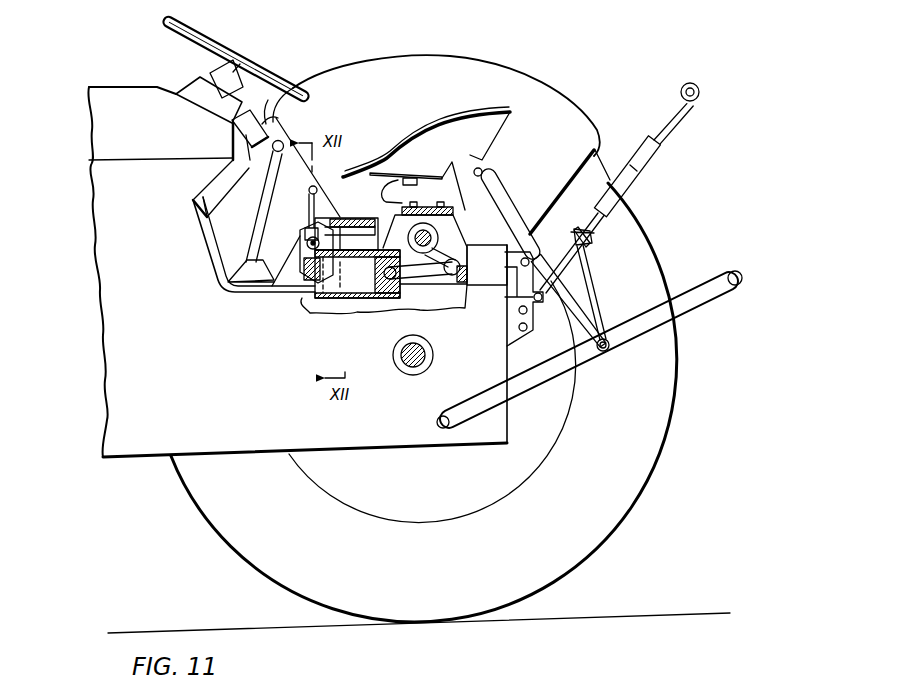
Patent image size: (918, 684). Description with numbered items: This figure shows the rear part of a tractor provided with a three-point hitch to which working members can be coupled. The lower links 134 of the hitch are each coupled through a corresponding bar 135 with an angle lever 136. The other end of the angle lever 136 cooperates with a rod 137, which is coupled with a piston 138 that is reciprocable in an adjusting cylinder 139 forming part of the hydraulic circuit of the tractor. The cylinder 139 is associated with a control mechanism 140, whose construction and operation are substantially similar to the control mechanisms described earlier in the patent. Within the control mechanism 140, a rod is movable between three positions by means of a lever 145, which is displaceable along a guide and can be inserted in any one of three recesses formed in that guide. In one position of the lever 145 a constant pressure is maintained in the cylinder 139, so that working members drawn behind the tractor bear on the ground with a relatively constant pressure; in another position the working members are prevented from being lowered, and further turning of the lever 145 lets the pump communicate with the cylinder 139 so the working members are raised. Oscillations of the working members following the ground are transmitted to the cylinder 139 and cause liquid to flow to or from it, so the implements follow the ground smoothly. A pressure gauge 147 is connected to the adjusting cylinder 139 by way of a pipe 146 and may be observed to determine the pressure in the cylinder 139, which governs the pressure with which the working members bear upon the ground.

The lower links 134 is at (628, 345).
The bar 135 is at (582, 305).
The angle lever 136 is at (464, 220).
The rod 137 is at (440, 308).
The piston 138 is at (378, 300).
The adjusting cylinder 139 is at (328, 300).
The control mechanism 140 is at (300, 233).
The lever 145 is at (309, 190).
The pipe 146 is at (210, 268).
The pressure gauge 147 is at (284, 118).